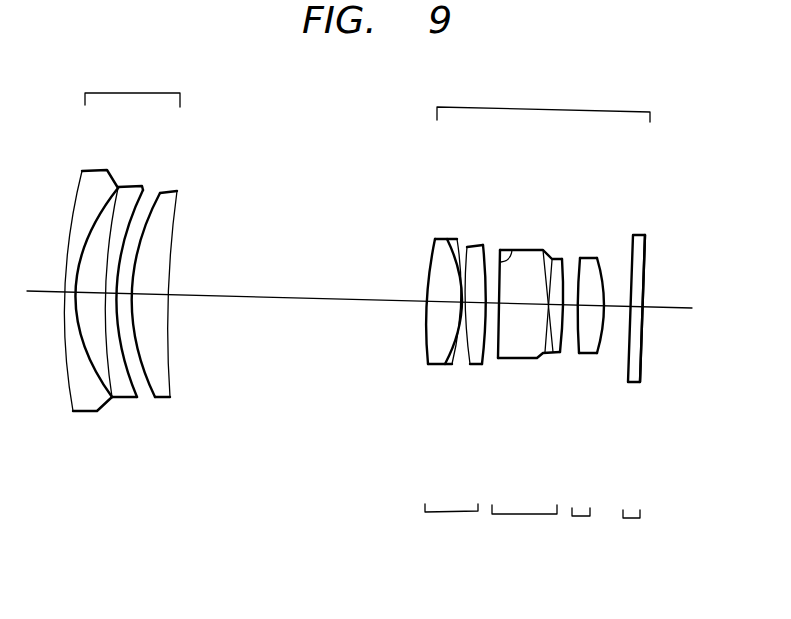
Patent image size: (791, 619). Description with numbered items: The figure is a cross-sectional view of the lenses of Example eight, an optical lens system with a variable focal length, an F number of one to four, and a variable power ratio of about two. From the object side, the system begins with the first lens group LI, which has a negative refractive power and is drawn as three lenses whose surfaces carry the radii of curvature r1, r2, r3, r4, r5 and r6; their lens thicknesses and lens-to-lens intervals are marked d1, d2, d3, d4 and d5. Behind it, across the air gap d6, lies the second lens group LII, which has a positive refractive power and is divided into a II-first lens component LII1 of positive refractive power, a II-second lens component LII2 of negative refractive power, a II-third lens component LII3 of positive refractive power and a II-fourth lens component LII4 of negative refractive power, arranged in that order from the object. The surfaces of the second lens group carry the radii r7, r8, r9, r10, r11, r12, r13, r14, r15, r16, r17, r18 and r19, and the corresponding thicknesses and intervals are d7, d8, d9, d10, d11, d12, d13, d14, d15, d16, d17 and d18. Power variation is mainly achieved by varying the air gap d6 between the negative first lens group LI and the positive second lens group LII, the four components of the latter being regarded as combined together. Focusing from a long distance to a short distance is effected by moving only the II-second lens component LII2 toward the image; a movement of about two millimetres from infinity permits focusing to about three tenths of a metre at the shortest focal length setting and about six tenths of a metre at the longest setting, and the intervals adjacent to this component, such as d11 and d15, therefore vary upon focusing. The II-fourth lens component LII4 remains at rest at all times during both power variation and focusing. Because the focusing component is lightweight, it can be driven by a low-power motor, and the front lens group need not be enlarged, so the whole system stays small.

The radius of curvature of first lens surface r1 is at (80, 173).
The radius of curvature of second lens surface r2 is at (116, 192).
The radius of curvature of third lens surface r3 is at (130, 187).
The radius of curvature of fourth lens surface r4 is at (143, 192).
The radius of curvature of fifth lens surface r5 is at (163, 193).
The radius of curvature of sixth lens surface r6 is at (177, 195).
The radius of curvature of seventh lens surface r7 is at (428, 250).
The radius of curvature of eighth lens surface r8 is at (448, 240).
The radius of curvature of ninth lens surface r9 is at (465, 243).
The radius of curvature of tenth lens surface r10 is at (485, 247).
The radius of curvature of eleventh lens surface r11 is at (500, 250).
The radius of curvature of twelfth lens surface r12 is at (518, 250).
The radius of curvature of thirteenth lens surface r13 is at (540, 255).
The radius of curvature of fourteenth lens surface r14 is at (557, 255).
The radius of curvature of fifteenth lens surface r15 is at (572, 265).
The radius of curvature of sixteenth lens surface r16 is at (583, 258).
The radius of curvature of seventeenth lens surface r17 is at (600, 257).
The radius of curvature of eighteenth lens surface r18 is at (626, 243).
The radius of curvature of nineteenth lens surface r19 is at (647, 245).
The lens thickness d1 is at (70, 296).
The lens-to-lens interval d2 is at (89, 294).
The lens thickness d3 is at (114, 296).
The lens-to-lens interval d4 is at (128, 298).
The lens thickness d5 is at (145, 296).
The lens-to-lens interval d6 is at (310, 299).
The lens thickness d7 is at (438, 308).
The lens thickness d8 is at (458, 318).
The lens-to-lens interval d9 is at (462, 309).
The lens thickness d10 is at (473, 308).
The lens-to-lens interval d11 is at (490, 310).
The lens thickness d12 is at (517, 308).
The lens thickness d13 is at (537, 310).
The lens thickness d14 is at (554, 310).
The lens-to-lens interval d15 is at (572, 310).
The lens thickness d16 is at (592, 311).
The lens-to-lens interval d17 is at (617, 311).
The lens thickness d18 is at (642, 316).
The first lens group LI is at (132, 86).
The second lens group LII is at (543, 101).
The II-first lens component LII1 is at (451, 526).
The II-second lens component LII2 is at (524, 526).
The II-third lens component LII3 is at (579, 529).
The II-fourth lens component LII4 is at (626, 531).